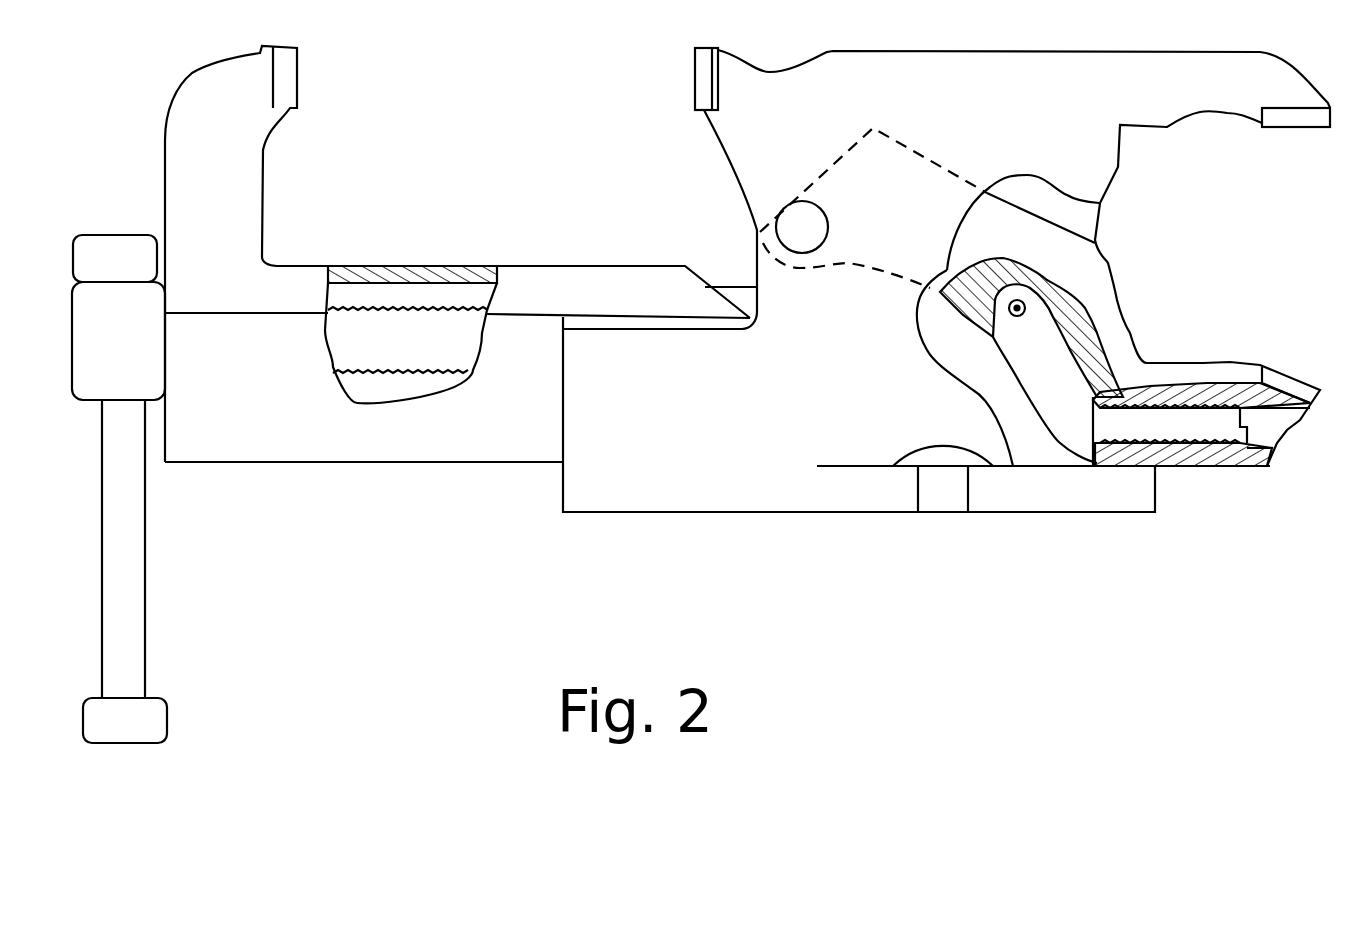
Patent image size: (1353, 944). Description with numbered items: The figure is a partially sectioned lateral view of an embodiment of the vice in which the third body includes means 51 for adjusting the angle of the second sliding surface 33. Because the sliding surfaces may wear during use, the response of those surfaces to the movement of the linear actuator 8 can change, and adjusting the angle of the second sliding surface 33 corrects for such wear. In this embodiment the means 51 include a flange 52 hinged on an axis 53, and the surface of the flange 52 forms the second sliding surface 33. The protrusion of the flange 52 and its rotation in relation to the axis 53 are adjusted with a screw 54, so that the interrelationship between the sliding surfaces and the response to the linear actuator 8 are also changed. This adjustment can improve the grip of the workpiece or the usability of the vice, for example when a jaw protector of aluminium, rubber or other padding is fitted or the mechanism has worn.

The linear actuator 8 is at (393, 355).
The second sliding surface 33 is at (1020, 380).
The means for adjusting the angle of the second sliding surface 51 is at (1043, 417).
The flange 52 is at (1072, 430).
The axis 53 is at (1117, 300).
The screw 54 is at (1197, 430).